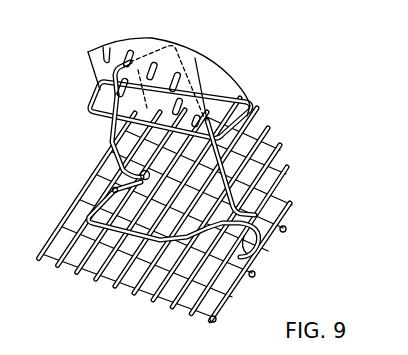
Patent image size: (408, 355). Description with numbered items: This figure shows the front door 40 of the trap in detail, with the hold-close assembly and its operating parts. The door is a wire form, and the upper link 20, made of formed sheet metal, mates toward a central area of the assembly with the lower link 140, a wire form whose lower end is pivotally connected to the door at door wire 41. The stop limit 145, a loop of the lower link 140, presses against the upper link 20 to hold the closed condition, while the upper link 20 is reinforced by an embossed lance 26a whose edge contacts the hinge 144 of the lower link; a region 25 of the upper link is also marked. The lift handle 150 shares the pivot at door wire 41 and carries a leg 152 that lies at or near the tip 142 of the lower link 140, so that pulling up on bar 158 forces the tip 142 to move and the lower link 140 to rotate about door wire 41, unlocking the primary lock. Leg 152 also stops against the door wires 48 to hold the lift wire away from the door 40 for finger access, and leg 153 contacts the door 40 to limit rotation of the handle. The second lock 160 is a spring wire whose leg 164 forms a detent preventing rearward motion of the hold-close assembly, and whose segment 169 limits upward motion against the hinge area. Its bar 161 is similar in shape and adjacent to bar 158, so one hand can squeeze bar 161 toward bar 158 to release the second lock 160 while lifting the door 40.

The upper link 20 is at (155, 79).
The bracket top flange 25 is at (218, 69).
The embossed lance 26a is at (176, 112).
The front door 40 is at (181, 215).
The door wire 41 is at (290, 230).
The door wires 48 is at (157, 297).
The lower link 140 is at (172, 165).
The tip 142 is at (255, 238).
The hinge 144 is at (230, 124).
The stop limit 145 is at (143, 58).
The lift handle 150 is at (130, 247).
The leg 152 is at (237, 283).
The leg 153 is at (257, 258).
The bar 158 is at (108, 227).
The second lock 160 is at (176, 110).
The bar 161 is at (113, 124).
The second lock leg 164 is at (214, 110).
The segment 169 is at (150, 110).